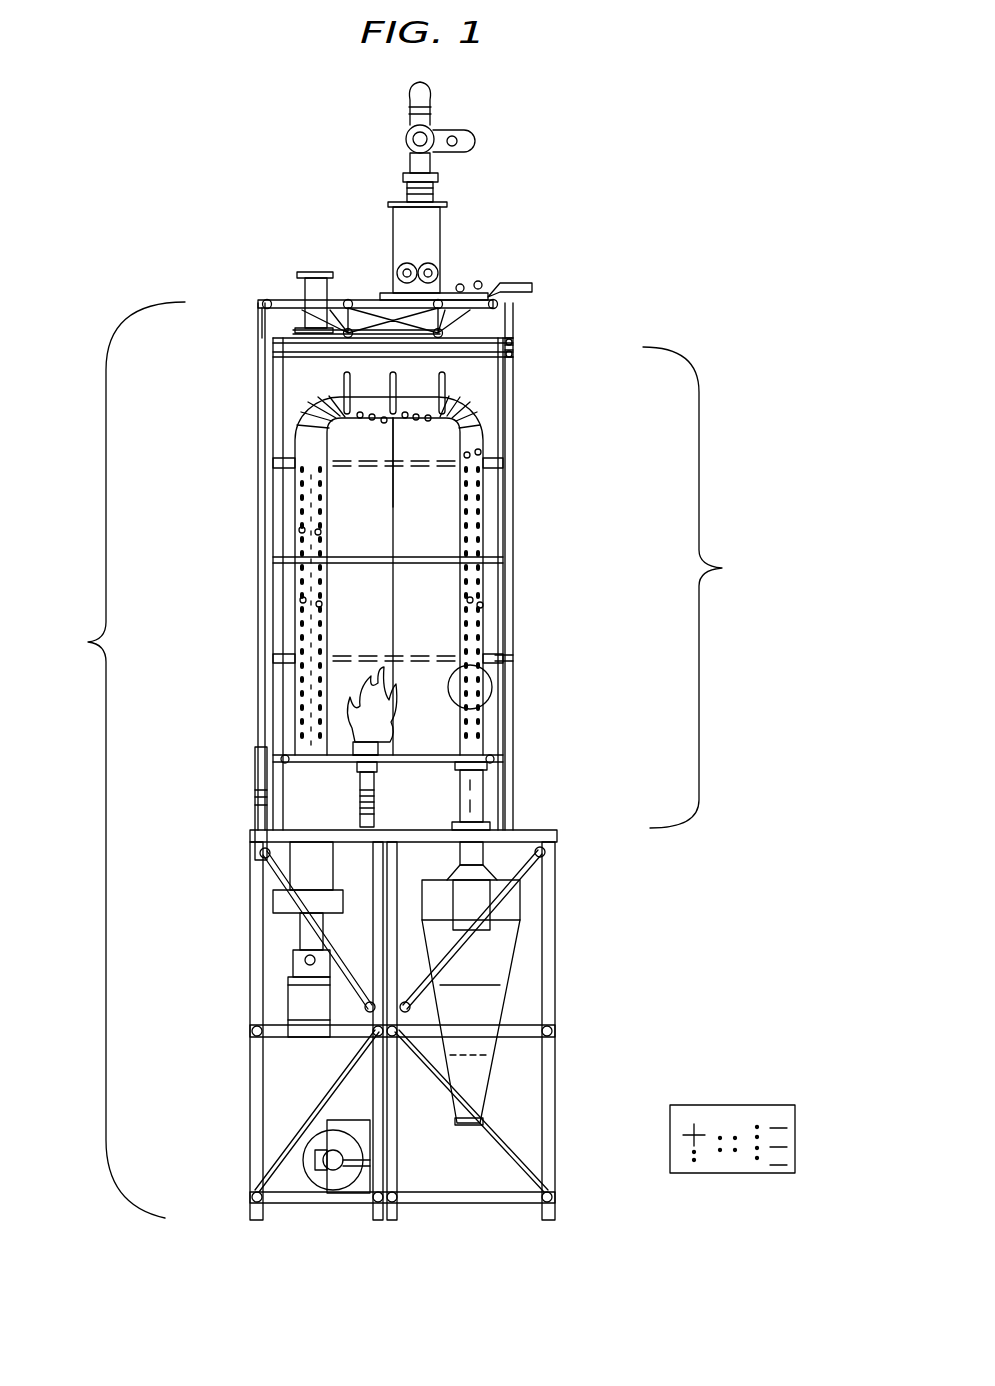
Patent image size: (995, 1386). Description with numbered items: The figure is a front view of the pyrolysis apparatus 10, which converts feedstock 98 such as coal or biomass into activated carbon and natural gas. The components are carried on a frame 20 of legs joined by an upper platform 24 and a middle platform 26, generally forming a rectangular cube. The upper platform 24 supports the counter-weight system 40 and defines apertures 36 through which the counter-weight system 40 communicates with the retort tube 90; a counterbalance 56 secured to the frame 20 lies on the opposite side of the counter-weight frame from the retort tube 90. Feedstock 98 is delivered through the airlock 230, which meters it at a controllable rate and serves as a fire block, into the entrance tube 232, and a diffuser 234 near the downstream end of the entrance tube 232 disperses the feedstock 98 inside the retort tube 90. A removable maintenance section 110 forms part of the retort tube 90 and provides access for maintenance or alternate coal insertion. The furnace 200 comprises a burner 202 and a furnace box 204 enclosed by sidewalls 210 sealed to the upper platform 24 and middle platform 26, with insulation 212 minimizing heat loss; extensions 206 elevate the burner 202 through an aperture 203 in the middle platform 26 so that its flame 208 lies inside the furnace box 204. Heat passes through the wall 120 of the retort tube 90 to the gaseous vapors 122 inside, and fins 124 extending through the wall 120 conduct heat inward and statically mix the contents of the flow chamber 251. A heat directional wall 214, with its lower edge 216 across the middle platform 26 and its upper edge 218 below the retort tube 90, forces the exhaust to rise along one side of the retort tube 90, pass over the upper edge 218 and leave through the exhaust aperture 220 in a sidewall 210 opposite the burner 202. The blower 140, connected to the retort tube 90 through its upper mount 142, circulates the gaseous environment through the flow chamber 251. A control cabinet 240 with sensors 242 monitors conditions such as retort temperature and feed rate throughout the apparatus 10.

The apparatus 10 is at (584, 164).
The frame 20 is at (110, 760).
The upper platform 24 is at (516, 344).
The middle platform 26 is at (495, 755).
The apertures 36 is at (364, 331).
The counter-weight system 40 is at (470, 320).
The counterbalance 56 is at (257, 770).
The retort tube 90 is at (405, 575).
The feedstock 98 is at (405, 90).
The maintenance section 110 is at (480, 795).
The wall 120 is at (470, 490).
The gaseous vapors 122 is at (488, 542).
The fins 124 is at (478, 440).
The blower 140 is at (275, 905).
The upper mount 142 is at (545, 855).
The furnace 200 is at (332, 1060).
The burner 202 is at (388, 727).
The aperture 203 is at (355, 746).
The furnace box 204 is at (715, 587).
The extensions 206 is at (365, 849).
The flame 208 is at (445, 663).
The sidewalls 210 is at (456, 541).
The insulation 212 is at (441, 566).
The heat directional wall 214 is at (392, 507).
The lower edge 216 is at (393, 762).
The upper edge 218 is at (390, 415).
The exhaust aperture 220 is at (492, 668).
The airlock 230 is at (426, 170).
The entrance tube 232 is at (305, 295).
The diffuser 234 is at (345, 382).
The control cabinet 240 is at (753, 1129).
The sensors 242 is at (700, 1116).
The flow chamber 251 is at (300, 527).